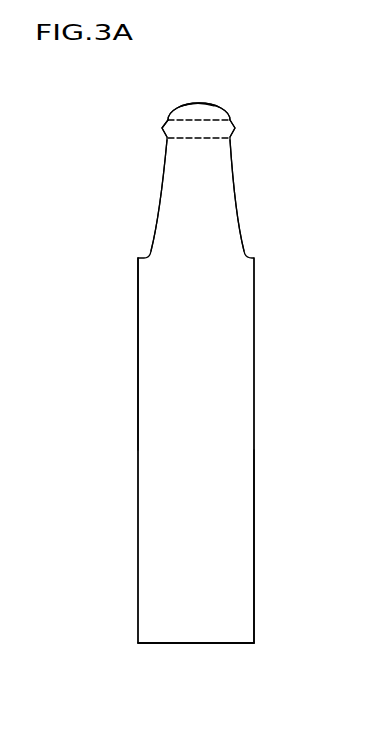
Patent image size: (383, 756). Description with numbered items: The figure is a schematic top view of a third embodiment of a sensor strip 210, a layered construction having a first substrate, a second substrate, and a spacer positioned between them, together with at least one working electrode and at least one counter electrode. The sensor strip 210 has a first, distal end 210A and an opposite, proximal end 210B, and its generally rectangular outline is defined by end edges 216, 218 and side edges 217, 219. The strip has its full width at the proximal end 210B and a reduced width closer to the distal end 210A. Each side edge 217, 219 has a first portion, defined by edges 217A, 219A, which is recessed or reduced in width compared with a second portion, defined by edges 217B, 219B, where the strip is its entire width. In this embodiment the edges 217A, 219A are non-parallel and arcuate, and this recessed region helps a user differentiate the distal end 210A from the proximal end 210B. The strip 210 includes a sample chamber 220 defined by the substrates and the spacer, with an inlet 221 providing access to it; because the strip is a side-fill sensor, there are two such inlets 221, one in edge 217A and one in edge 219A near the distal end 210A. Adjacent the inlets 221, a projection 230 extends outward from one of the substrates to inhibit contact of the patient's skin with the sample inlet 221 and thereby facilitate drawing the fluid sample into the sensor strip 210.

The sensor strip 210 is at (80, 152).
The distal end 210A is at (223, 108).
The proximal end 210B is at (165, 645).
The end edge 216 is at (203, 103).
The side edge 217 is at (255, 472).
The recessed side edge portion 217A is at (233, 180).
The full-width side edge portion 217B is at (255, 568).
The end edge 218 is at (218, 645).
The side edge 219 is at (138, 467).
The recessed side edge portion 219A is at (162, 192).
The full-width side edge portion 219B is at (138, 365).
The sample chamber 220 is at (188, 121).
The inlet 221 is at (162, 135).
The projection 230 is at (166, 122).